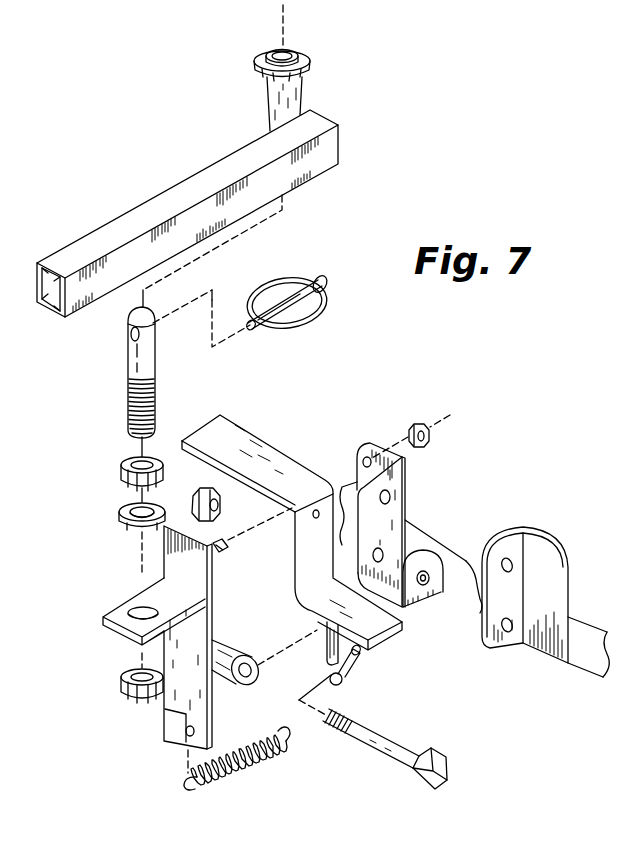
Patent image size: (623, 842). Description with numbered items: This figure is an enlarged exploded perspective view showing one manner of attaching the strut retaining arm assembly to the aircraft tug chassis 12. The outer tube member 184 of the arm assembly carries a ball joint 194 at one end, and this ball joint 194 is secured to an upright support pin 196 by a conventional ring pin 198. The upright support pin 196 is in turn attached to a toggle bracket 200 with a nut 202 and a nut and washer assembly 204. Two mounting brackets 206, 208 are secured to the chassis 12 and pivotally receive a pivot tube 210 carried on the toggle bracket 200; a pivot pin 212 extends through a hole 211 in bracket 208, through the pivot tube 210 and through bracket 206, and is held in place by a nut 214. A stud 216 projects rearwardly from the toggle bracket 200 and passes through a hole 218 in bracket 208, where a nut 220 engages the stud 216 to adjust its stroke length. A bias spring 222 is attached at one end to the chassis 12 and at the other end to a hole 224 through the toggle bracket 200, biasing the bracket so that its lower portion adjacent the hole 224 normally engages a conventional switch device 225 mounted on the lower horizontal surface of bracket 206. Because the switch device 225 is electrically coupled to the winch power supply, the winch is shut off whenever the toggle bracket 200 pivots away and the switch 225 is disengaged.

The chassis 12 is at (585, 657).
The outer tube member 184 is at (193, 192).
The ball joint 194 is at (298, 52).
The upright support pin 196 is at (129, 343).
The ring pin 198 is at (285, 278).
The toggle bracket 200 is at (164, 722).
The nut 202 is at (118, 686).
The nut and washer assembly 204 is at (106, 498).
The mounting bracket 206 is at (313, 553).
The mounting bracket 208 is at (394, 502).
The pivot tube 210 is at (225, 643).
The hole 211 is at (448, 572).
The pivot pin 212 is at (380, 747).
The nut 214 is at (193, 496).
The stud 216 is at (223, 553).
The hole 218 is at (355, 458).
The nut 220 is at (413, 427).
The bias spring 222 is at (248, 767).
The hole 224 is at (175, 735).
The switch device 225 is at (372, 655).